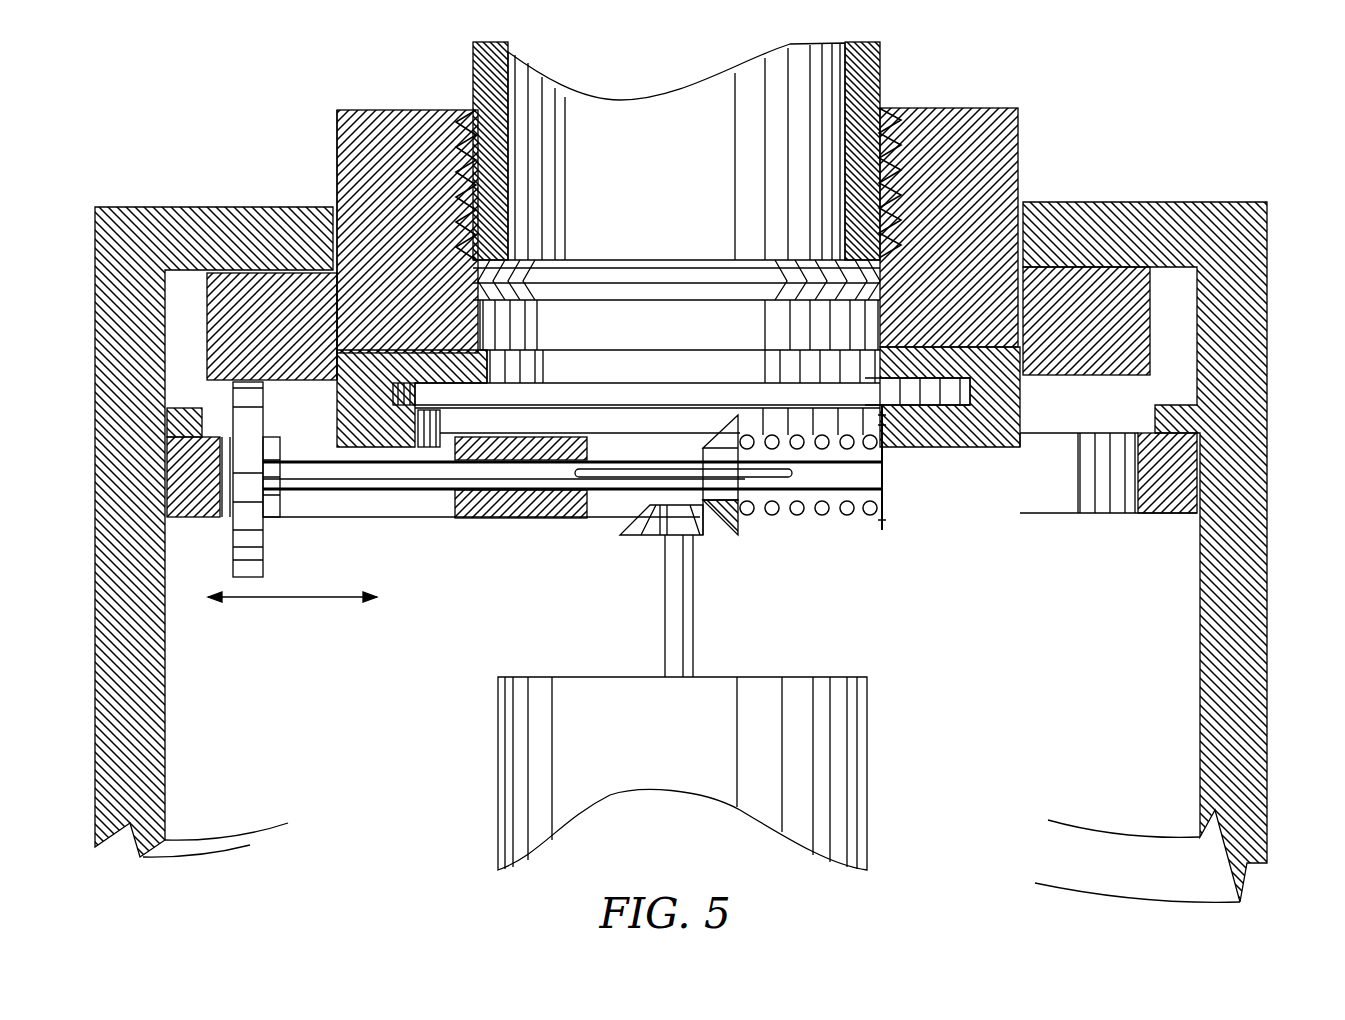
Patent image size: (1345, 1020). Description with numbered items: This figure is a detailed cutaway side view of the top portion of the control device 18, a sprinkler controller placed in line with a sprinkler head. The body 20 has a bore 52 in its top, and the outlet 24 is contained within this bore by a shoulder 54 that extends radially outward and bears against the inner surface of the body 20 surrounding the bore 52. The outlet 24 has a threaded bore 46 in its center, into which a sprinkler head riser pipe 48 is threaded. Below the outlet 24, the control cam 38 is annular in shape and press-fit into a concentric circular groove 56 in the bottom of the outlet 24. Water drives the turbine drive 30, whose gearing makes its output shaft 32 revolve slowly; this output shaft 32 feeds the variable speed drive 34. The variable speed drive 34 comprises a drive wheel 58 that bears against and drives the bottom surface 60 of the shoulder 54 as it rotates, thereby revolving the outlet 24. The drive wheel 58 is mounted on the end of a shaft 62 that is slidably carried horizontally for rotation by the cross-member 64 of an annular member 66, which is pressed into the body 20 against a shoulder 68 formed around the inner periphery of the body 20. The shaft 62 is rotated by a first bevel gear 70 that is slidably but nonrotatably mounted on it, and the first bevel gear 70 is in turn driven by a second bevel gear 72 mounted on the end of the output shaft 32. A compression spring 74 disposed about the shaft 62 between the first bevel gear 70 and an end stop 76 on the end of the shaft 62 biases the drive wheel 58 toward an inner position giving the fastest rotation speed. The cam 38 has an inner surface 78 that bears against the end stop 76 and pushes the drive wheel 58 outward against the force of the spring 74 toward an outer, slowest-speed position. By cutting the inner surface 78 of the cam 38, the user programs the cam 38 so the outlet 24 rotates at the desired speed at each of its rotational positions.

The control device 18 is at (1215, 155).
The body 20 is at (291, 736).
The outlet 24 is at (1005, 150).
The turbine drive 30 is at (750, 705).
The output shaft 32 is at (690, 620).
The variable speed drive 34 is at (930, 575).
The control cam 38 is at (1020, 410).
The threaded bore 46 is at (510, 198).
The sprinkler head riser pipe 48 is at (473, 85).
The bore 52 is at (337, 215).
The shoulder 54 is at (188, 265).
The concentric circular groove 56 is at (1035, 360).
The drive wheel 58 is at (255, 535).
The bottom surface 60 is at (283, 380).
The shaft 62 is at (337, 478).
The cross-member 64 is at (535, 520).
The annular member 66 is at (190, 517).
The shoulder 68 is at (190, 408).
The first bevel gear 70 is at (745, 505).
The second bevel gear 72 is at (700, 523).
The compression spring 74 is at (850, 518).
The end stop 76 is at (885, 522).
The inner surface 78 is at (440, 430).